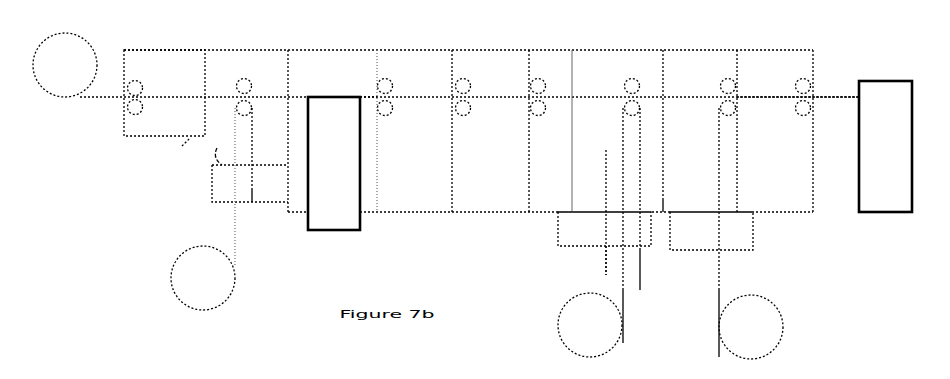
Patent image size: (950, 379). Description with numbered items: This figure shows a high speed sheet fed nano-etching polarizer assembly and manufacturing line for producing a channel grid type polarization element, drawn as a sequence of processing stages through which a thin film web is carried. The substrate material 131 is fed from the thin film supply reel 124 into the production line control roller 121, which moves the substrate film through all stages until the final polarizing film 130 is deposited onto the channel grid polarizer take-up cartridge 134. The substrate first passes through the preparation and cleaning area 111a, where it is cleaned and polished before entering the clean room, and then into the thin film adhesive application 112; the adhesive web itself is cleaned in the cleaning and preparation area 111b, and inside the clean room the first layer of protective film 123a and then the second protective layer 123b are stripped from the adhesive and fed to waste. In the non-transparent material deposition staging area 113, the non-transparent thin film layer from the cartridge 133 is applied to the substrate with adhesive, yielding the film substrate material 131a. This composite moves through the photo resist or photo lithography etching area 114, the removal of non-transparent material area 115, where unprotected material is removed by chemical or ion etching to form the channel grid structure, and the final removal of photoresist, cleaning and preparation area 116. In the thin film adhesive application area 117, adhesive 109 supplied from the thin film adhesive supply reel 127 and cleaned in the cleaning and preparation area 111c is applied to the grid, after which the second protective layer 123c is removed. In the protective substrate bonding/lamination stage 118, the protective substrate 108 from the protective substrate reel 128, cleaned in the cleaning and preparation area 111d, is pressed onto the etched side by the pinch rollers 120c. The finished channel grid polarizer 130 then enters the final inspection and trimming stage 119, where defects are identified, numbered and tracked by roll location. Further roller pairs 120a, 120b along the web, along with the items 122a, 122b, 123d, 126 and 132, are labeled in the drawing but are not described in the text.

The protective substrate 108 is at (718, 299).
The thin film adhesive 109 is at (625, 299).
The preparation and cleaning area 111a is at (164, 93).
The cleaning and preparation area 111b is at (250, 183).
The cleaning and preparation area 111c is at (604, 229).
The cleaning and preparation area 111d is at (711, 231).
The thin film adhesive application 112 is at (250, 131).
The non-transparent material deposition staging area 113 is at (350, 131).
The photo resist or photo lithography etching area 114 is at (427, 131).
The removal of non-transparent material area 115 is at (507, 131).
The final removal of photoresist, cleaning and preparation area 116 is at (557, 131).
The thin film adhesive application area 117 is at (621, 131).
The protective substrate bonding/lamination stage 118 is at (683, 180).
The final inspection and trimming stage 119 is at (213, 221).
The roller pair 120a is at (256, 91).
The roller pair 120b is at (382, 110).
The pinch rollers 120c is at (627, 104).
The control roller 121 is at (143, 83).
The sensor 122a is at (219, 164).
The sensor 122b is at (606, 157).
The first layer of protective film 123a is at (182, 148).
The second protective layer 123b is at (253, 205).
The second protective layer 123c is at (604, 260).
The detector 123d is at (642, 261).
The thin film supply reel 124 is at (65, 65).
The roll 126 is at (203, 209).
The thin film adhesive supply reel 127 is at (590, 325).
The protective substrate reel 128 is at (751, 327).
The channel grid polarizer film 130 is at (751, 91).
The substrate material 131 is at (91, 100).
The film substrate material 131a is at (366, 91).
The roller 132 is at (551, 105).
The non-transparent thin film cartridge 133 is at (334, 163).
The channel grid polarizer take-up cartridge 134 is at (885, 146).